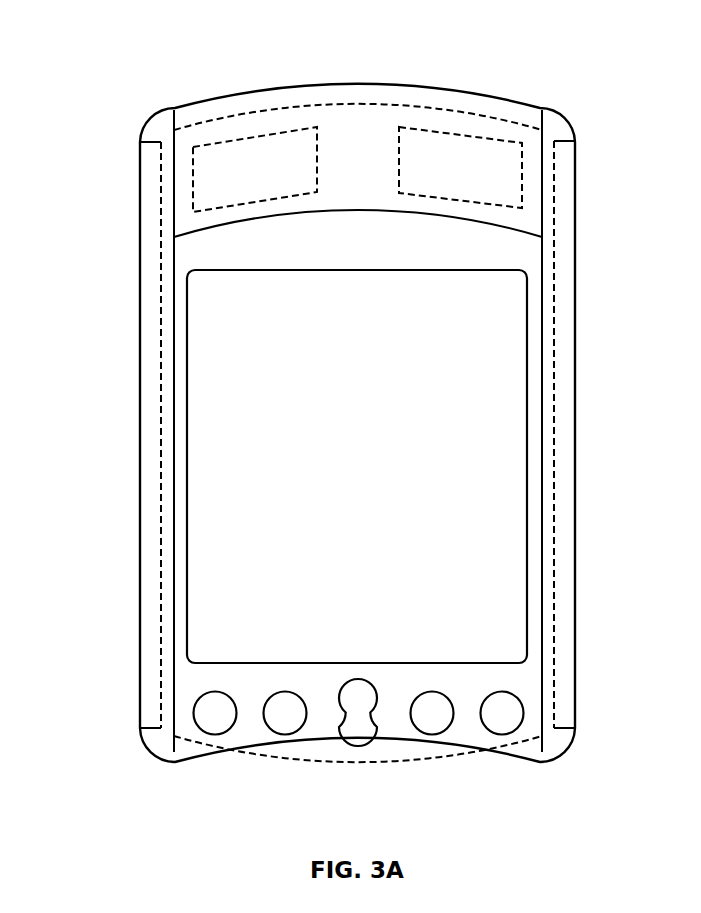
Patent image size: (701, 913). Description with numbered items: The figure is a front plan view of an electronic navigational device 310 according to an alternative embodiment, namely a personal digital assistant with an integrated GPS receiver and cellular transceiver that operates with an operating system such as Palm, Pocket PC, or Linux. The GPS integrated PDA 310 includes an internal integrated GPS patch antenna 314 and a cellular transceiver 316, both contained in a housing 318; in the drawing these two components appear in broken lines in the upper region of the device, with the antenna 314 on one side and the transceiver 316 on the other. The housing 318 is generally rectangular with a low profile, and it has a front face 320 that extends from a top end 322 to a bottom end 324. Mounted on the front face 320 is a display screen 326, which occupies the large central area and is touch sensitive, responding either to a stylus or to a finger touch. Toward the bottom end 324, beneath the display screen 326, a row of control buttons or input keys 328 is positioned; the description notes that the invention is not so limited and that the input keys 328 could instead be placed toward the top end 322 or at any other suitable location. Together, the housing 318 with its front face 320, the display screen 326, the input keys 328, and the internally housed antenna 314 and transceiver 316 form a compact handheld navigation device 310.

The electronic navigational device 310 is at (131, 43).
The internal integrated GPS patch antenna 314 is at (263, 148).
The cellular transceiver 316 is at (453, 148).
The housing 318 is at (140, 235).
The front face 320 is at (192, 260).
The top end 322 is at (363, 83).
The bottom end 324 is at (465, 773).
The display screen 326 is at (502, 483).
The input keys 328 is at (217, 734).